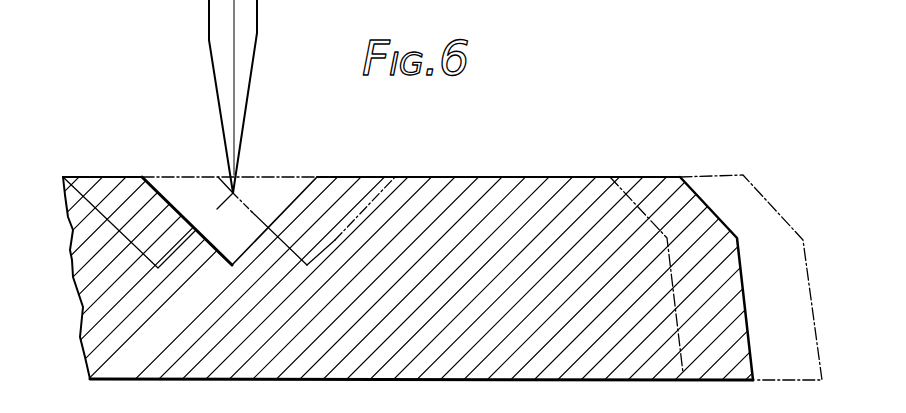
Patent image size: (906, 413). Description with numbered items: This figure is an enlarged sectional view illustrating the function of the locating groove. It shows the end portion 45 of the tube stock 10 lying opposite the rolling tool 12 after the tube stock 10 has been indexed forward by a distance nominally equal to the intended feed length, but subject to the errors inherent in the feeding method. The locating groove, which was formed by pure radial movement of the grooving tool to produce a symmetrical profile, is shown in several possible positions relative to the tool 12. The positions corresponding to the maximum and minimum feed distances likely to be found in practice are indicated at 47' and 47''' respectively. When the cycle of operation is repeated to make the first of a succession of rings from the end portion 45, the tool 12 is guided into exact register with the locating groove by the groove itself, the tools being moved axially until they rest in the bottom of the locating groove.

The tube stock 10 is at (107, 176).
The tool 12 is at (258, 15).
The end portion 45 is at (452, 182).
The locating groove position 47' is at (319, 188).
The locating groove position 47''' is at (249, 188).